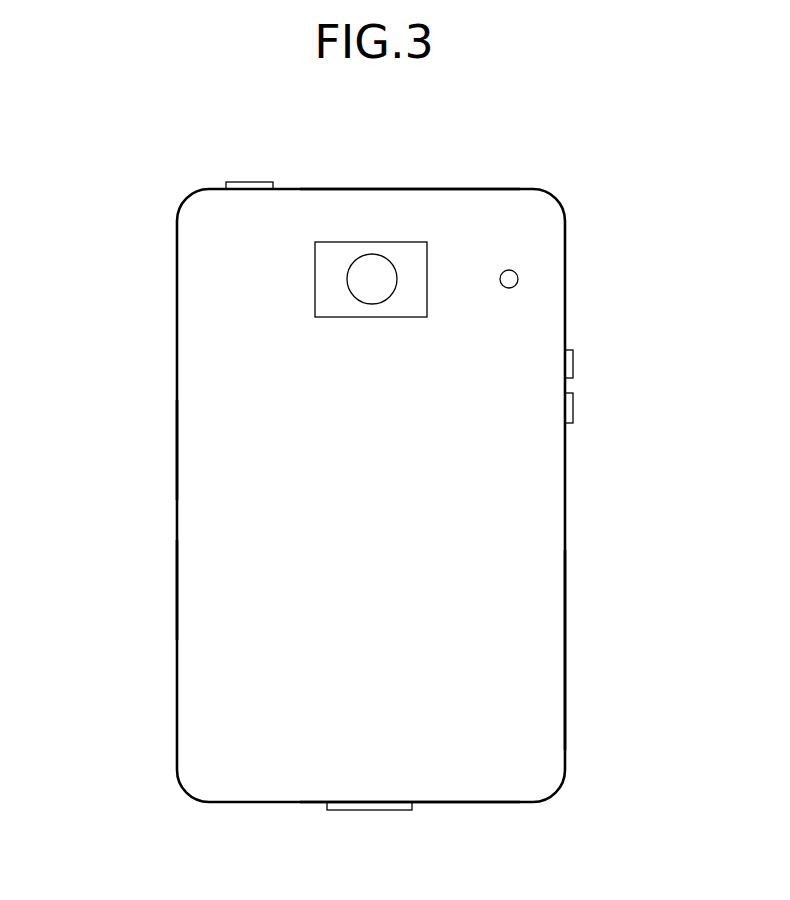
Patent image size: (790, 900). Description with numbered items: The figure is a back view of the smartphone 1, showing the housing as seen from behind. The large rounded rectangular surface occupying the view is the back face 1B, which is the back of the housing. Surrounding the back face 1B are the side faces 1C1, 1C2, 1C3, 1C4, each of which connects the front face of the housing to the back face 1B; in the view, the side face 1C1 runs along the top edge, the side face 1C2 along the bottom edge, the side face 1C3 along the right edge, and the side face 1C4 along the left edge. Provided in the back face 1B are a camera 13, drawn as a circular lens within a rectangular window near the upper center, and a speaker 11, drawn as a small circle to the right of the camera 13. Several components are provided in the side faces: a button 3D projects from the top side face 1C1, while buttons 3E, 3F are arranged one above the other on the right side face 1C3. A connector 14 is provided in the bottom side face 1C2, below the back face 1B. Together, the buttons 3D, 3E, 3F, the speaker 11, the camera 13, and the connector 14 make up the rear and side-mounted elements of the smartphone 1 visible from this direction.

The smartphone 1 is at (584, 160).
The back face 1B is at (206, 452).
The side face 1C1 is at (473, 189).
The side face 1C2 is at (486, 803).
The side face 1C3 is at (565, 648).
The side face 1C4 is at (177, 587).
The button 3D is at (250, 181).
The button 3E is at (574, 367).
The button 3F is at (574, 412).
The speaker 11 is at (518, 278).
The camera 13 is at (372, 278).
The connector 14 is at (363, 812).